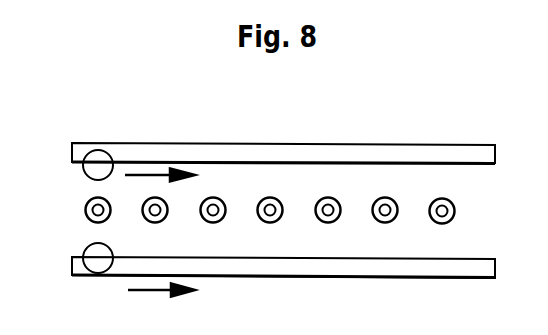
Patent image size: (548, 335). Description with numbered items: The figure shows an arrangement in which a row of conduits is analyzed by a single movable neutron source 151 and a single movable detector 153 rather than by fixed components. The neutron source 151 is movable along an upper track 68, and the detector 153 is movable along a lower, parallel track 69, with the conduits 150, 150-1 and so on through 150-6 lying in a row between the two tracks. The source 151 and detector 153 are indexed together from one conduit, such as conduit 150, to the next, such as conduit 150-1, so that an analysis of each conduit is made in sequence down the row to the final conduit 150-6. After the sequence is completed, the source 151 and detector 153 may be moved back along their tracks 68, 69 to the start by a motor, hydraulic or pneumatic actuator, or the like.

The track 68 is at (271, 143).
The track 69 is at (320, 268).
The conduit 150 is at (85, 216).
The conduit 150-1 is at (163, 221).
The conduit 150-6 is at (452, 219).
The neutron source 151 is at (98, 156).
The detector 153 is at (95, 263).